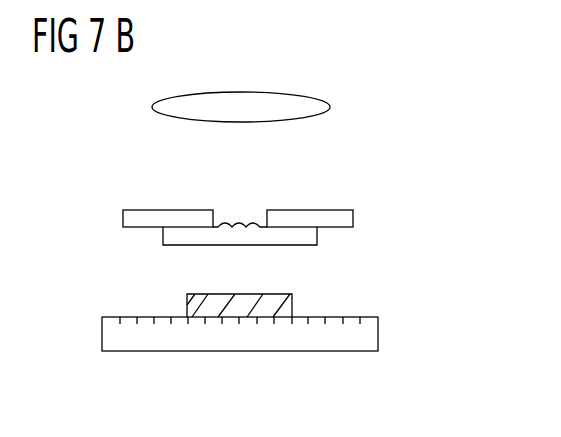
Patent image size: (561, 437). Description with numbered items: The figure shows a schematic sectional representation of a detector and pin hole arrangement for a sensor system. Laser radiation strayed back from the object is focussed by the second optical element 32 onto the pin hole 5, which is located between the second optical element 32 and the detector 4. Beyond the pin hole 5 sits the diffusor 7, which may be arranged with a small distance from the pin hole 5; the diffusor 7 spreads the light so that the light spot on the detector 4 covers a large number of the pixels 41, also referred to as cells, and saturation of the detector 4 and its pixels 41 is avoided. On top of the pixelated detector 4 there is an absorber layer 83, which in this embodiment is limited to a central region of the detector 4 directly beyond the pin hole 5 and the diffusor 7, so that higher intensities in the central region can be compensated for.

The second optical element 32 is at (313, 101).
The pin hole 5 is at (353, 216).
The diffusor 7 is at (317, 237).
The absorber layer 83 is at (285, 305).
The detector 4 is at (127, 345).
The pixels 41 is at (350, 322).